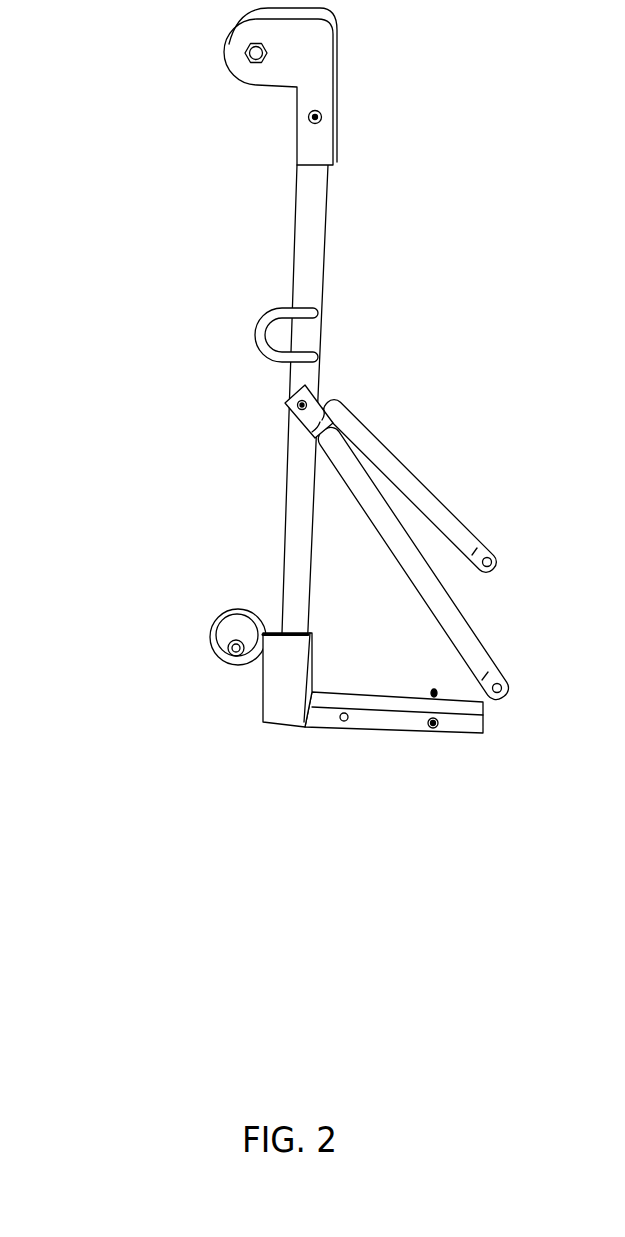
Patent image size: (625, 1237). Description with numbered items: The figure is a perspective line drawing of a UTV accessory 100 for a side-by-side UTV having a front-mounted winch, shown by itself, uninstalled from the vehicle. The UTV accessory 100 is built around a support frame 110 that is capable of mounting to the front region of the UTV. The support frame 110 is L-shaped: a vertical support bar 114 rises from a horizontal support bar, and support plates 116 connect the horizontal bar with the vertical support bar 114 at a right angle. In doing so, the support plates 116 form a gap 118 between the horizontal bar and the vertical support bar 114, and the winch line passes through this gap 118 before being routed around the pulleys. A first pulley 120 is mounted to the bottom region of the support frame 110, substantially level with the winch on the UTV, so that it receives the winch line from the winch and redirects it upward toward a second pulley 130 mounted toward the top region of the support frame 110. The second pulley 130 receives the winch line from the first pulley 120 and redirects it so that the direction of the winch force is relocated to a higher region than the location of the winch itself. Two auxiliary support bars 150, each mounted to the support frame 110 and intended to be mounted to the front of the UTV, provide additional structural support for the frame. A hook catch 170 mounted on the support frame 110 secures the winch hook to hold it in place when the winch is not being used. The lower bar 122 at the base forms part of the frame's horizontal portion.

The UTV accessory 100 is at (288, 410).
The support frame 110 is at (295, 410).
The vertical support bar 114 is at (313, 245).
The support plates 116 is at (323, 722).
The gap 118 is at (256, 689).
The first pulley 120 is at (238, 637).
The hitch bar 122 is at (403, 723).
The second pulley 130 is at (232, 47).
The auxiliary support bars 150 is at (382, 522).
The hook catch 170 is at (273, 310).